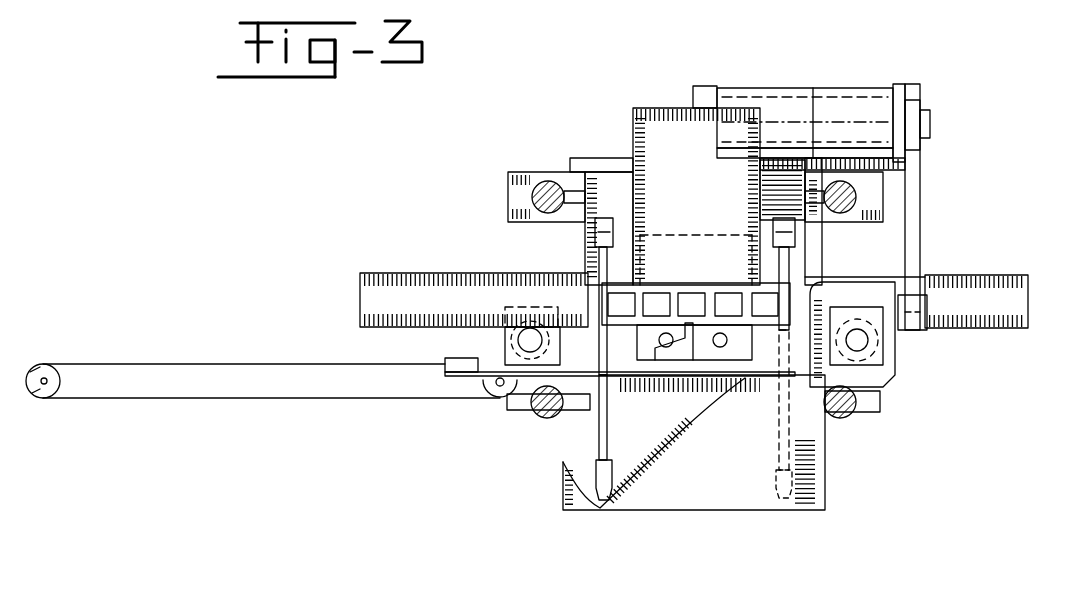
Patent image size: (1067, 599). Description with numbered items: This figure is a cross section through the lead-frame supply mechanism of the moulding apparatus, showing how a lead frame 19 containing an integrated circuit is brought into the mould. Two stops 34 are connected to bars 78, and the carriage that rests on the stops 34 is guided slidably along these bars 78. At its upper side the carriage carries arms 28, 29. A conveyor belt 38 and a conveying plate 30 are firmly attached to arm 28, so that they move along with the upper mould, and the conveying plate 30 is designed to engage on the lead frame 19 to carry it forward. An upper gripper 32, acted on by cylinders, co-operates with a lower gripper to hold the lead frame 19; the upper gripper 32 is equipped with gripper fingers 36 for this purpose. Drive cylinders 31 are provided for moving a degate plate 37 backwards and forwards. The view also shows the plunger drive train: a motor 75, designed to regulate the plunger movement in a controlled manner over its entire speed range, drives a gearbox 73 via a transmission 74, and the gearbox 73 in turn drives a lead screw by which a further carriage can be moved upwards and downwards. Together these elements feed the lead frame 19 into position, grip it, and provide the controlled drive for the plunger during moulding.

The lead frame 19 is at (720, 307).
The arm 28 is at (417, 292).
The arm 29 is at (995, 292).
The conveying plate 30 is at (677, 367).
The drive cylinders 31 is at (597, 262).
The upper gripper 32 is at (652, 122).
The stops 34 is at (880, 222).
The gripper fingers 36 is at (805, 508).
The degate plate 37 is at (730, 510).
The conveyor belt 38 is at (162, 365).
The gearbox 73 is at (882, 368).
The transmission 74 is at (918, 243).
The motor 75 is at (856, 96).
The bars 78 is at (540, 182).